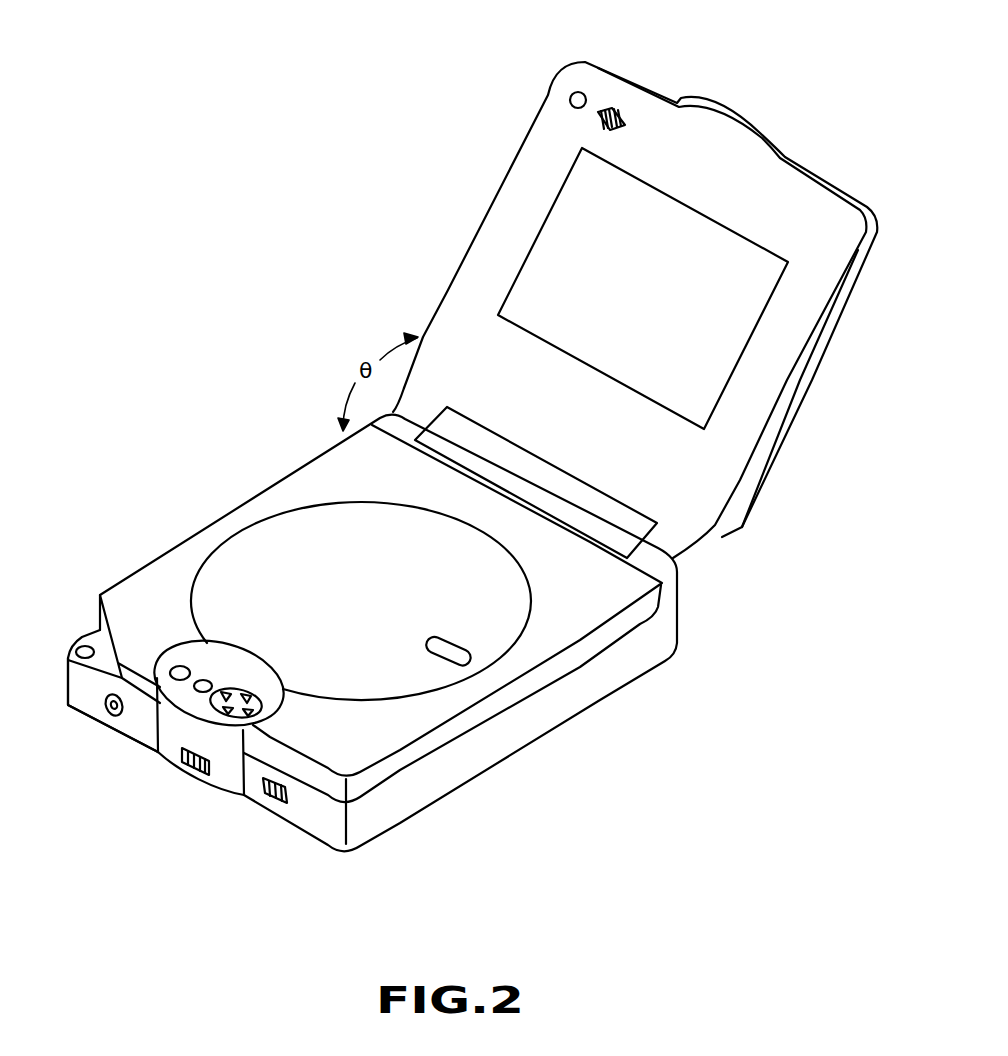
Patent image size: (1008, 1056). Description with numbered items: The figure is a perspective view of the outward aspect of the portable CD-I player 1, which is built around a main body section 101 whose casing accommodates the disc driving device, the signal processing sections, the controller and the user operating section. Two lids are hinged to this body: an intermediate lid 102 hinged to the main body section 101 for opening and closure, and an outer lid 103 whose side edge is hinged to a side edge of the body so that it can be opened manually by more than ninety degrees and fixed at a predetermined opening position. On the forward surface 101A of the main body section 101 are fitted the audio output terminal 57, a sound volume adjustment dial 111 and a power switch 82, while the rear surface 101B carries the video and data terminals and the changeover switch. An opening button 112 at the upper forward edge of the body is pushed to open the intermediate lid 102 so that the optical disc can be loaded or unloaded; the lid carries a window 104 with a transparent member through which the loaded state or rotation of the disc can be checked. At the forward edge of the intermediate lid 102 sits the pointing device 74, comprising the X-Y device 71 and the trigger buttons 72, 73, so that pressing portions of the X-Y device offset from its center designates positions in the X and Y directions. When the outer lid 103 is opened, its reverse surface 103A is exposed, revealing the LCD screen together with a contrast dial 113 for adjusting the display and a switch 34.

The CD-I player 1 is at (275, 294).
The switch 34 is at (571, 98).
The contrast dial 113 is at (609, 106).
The reverse surface 103A is at (800, 204).
The outer lid 103 is at (752, 486).
The intermediate lid 102 is at (165, 575).
The opening button 112 is at (84, 645).
The forward surface 101A is at (83, 703).
The audio output terminal 57 is at (120, 718).
The trigger button 72 is at (178, 681).
The trigger button 73 is at (201, 694).
The sound volume adjustment dial 111 is at (197, 771).
The X-Y device 71 is at (238, 718).
The pointing device 74 is at (187, 906).
The power switch 82 is at (283, 807).
The window 104 is at (470, 662).
The main body section 101 is at (493, 757).
The rear surface 101B is at (679, 611).